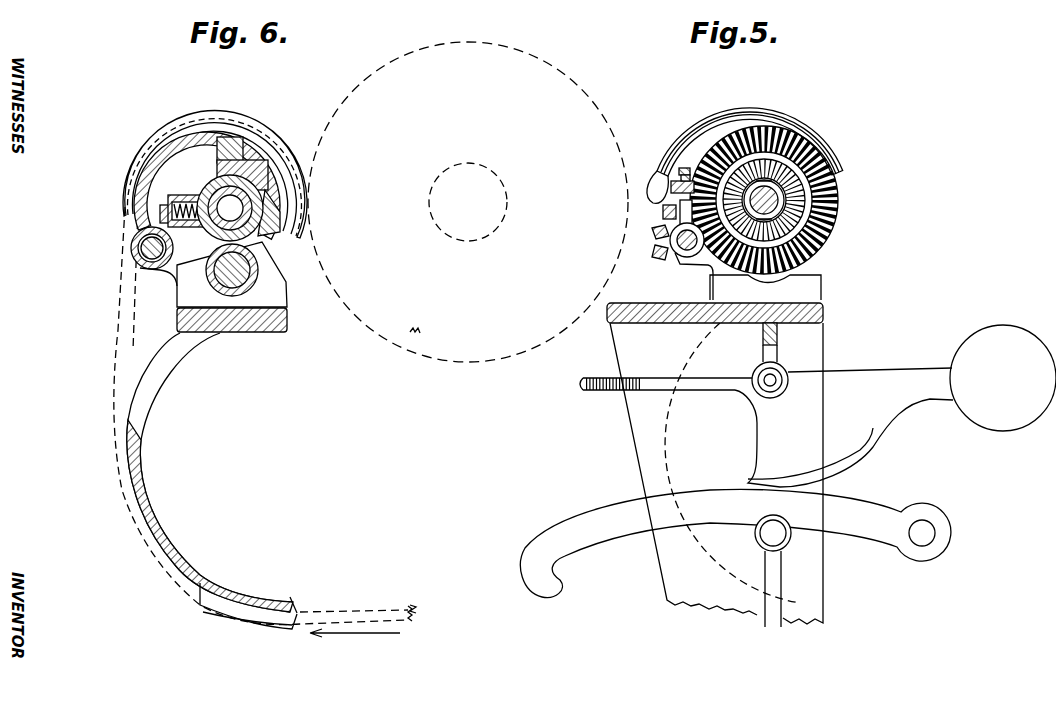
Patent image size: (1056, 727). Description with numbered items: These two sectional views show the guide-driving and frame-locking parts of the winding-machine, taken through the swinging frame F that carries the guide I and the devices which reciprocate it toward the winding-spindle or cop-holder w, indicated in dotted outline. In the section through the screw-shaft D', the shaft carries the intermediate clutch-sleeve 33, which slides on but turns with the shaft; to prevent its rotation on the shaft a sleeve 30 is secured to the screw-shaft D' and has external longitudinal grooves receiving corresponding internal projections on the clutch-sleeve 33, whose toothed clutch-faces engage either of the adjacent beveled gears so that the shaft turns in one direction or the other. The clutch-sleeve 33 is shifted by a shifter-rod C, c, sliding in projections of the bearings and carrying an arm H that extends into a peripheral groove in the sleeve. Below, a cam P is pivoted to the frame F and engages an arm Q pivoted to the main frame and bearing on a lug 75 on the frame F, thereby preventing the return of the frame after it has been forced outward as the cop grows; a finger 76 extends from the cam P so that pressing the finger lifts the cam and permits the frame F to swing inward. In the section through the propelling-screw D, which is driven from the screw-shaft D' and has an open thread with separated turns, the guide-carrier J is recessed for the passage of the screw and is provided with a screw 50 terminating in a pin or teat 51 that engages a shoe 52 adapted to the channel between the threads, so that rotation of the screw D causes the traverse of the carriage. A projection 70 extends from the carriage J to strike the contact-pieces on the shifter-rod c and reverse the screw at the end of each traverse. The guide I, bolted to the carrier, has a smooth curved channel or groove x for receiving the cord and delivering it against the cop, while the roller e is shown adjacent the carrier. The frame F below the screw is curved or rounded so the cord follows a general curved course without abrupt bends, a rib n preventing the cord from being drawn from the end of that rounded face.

In FIG. 6, the curved channel or groove x is at (235, 120).
In FIG. 5, the curved channel or groove x is at (468, 202).
In FIG. 5, the winding-spindle or cop-holder w is at (468, 202).
In FIG. 6, the propelling-screw D is at (219, 200).
In FIG. 5, the screw-shaft D' is at (771, 193).
In FIG. 5, the sleeve 30 is at (798, 200).
In FIG. 5, the clutch-sleeve 33 is at (803, 216).
In FIG. 5, the shifter-rod C is at (677, 235).
In FIG. 6, the shifter-rod c is at (132, 251).
In FIG. 5, the arm H is at (727, 233).
In FIG. 5, the finger 76 is at (584, 379).
In FIG. 5, the swinging frame F is at (633, 440).
In FIG. 5, the cam P is at (895, 406).
In FIG. 5, the arm Q is at (735, 543).
In FIG. 5, the lug 75 is at (773, 533).
In FIG. 6, the pin or teat 51 is at (170, 197).
In FIG. 6, the shoe 52 is at (216, 198).
In FIG. 6, the guide I is at (166, 209).
In FIG. 6, the screw 50 is at (172, 218).
In FIG. 6, the projection 70 is at (232, 274).
In FIG. 6, the guide-carrier J is at (172, 268).
In FIG. 6, the roller e is at (248, 287).
In FIG. 6, the rib n is at (237, 613).